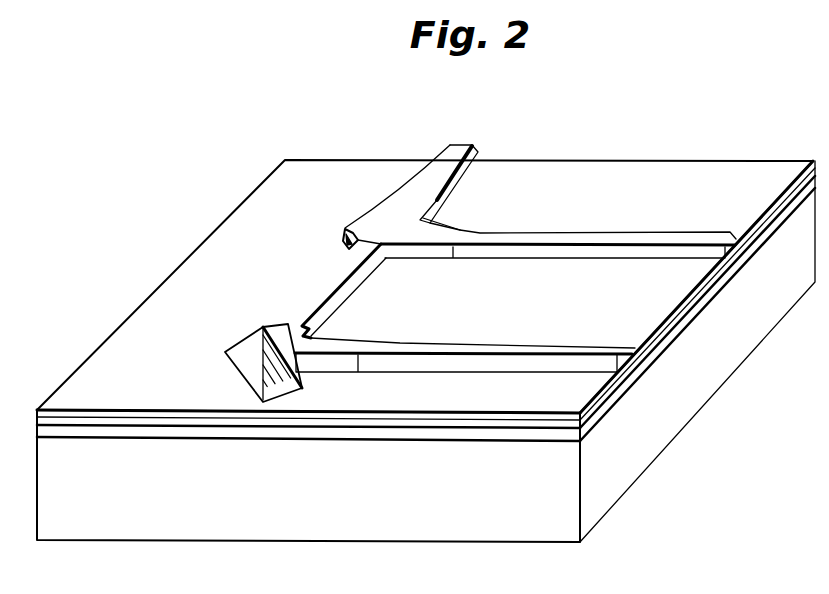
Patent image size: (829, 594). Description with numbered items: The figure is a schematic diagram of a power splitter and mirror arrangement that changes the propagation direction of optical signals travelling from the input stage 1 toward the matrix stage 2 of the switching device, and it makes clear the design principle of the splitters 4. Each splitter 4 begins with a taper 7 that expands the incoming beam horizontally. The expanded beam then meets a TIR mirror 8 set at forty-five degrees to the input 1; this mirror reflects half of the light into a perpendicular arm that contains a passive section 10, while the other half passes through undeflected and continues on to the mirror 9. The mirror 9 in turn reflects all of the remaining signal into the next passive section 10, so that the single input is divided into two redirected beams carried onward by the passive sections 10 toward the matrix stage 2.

The input stage 1 is at (447, 137).
The matrix stage 2 is at (225, 462).
The splitter 4 is at (387, 271).
The taper 7 is at (384, 226).
The TIR mirror 8 is at (342, 243).
The mirror 9 is at (291, 328).
The passive section 10 is at (604, 231).